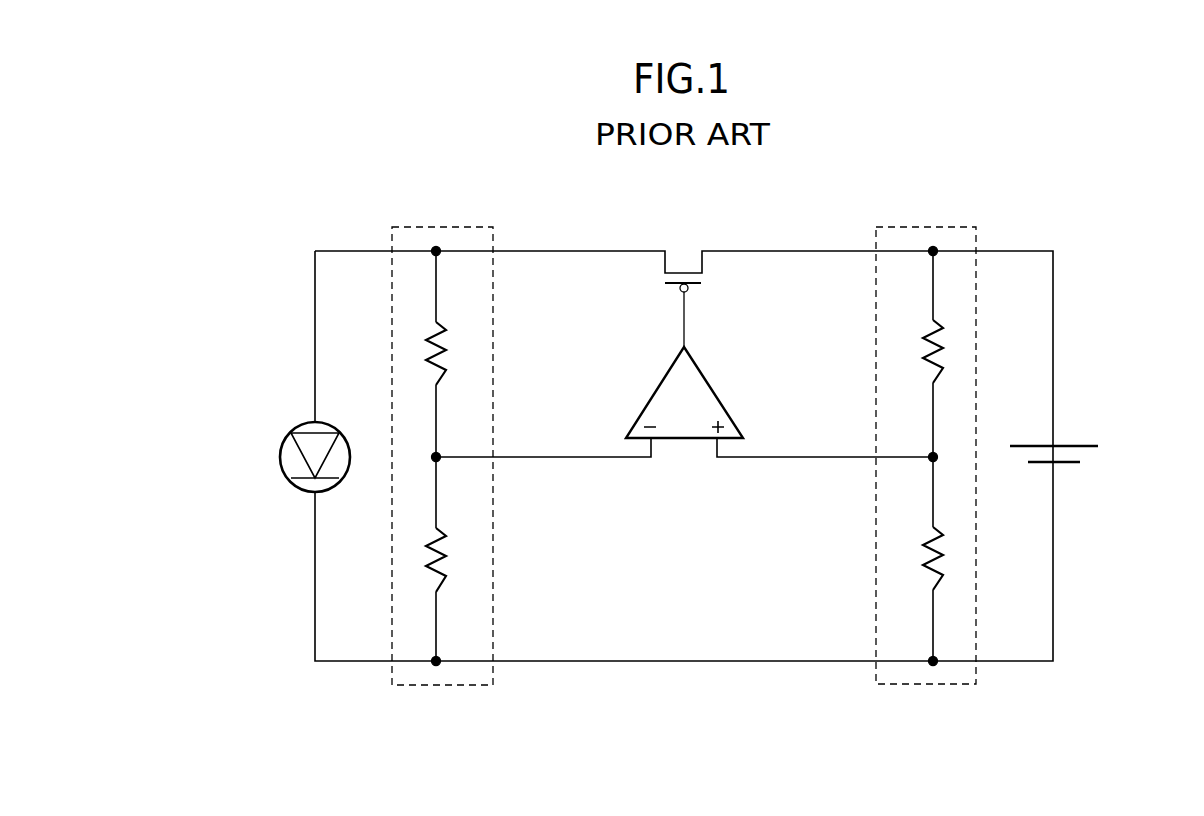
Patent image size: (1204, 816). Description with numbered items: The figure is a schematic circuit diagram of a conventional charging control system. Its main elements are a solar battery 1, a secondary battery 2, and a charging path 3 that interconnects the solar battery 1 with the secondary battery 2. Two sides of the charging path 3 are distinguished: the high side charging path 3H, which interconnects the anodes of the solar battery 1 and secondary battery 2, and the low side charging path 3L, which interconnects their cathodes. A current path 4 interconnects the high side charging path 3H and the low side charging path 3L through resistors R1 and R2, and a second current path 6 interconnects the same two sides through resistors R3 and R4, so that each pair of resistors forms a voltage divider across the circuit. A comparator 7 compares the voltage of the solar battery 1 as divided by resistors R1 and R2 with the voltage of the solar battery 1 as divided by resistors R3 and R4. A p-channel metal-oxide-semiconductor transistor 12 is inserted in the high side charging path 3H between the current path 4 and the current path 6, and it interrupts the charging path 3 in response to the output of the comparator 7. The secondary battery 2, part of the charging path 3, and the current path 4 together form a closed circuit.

The solar battery 1 is at (330, 426).
The secondary battery 2 is at (1042, 444).
The charging path 3 is at (212, 418).
The high side charging path 3H is at (315, 378).
The low side charging path 3L is at (315, 532).
The current path 4 is at (946, 226).
The current path 6 is at (464, 226).
The comparator 7 is at (664, 377).
The p-channel metal-oxide-semiconductor (PMOS) transistor 12 is at (702, 262).
The resistor R1 is at (452, 353).
The resistor R2 is at (453, 560).
The resistor R3 is at (915, 351).
The resistor R4 is at (915, 558).